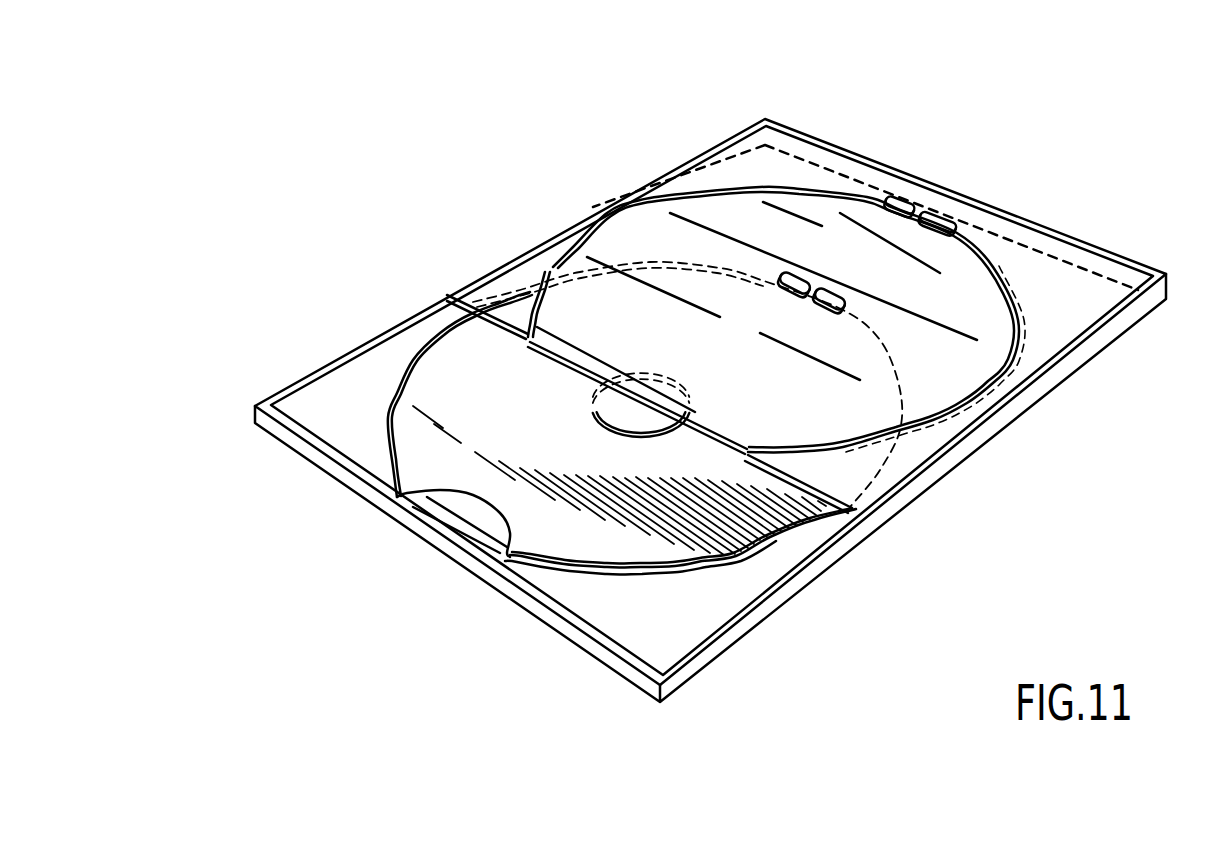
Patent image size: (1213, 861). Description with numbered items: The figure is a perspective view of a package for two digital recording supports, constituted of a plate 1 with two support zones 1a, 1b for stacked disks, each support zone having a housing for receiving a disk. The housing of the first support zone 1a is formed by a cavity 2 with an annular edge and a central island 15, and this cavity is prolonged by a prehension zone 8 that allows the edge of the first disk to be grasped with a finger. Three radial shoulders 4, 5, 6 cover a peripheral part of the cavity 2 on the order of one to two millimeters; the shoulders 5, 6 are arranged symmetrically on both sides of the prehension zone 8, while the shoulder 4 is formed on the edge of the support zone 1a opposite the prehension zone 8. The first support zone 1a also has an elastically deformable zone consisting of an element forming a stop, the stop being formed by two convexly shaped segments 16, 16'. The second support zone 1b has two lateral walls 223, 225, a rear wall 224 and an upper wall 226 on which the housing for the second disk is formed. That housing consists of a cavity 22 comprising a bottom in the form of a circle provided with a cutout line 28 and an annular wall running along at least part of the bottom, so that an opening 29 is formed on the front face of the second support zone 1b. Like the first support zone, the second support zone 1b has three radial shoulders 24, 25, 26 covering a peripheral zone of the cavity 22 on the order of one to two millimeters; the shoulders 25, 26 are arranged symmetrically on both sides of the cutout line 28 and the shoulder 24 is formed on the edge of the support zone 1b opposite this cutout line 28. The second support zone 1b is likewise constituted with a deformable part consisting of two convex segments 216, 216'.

The plate 1 is at (376, 546).
The support zone 1a is at (350, 427).
The support zone 1b is at (1065, 288).
The cavity 2 is at (720, 522).
The radial shoulder 4 is at (788, 282).
The radial shoulder 5 is at (673, 560).
The radial shoulder 6 is at (392, 394).
The prehension zone 8 is at (457, 546).
The central island 15 is at (607, 410).
The convexly shaped segment 16 is at (814, 255).
The convexly shaped segment 16' is at (887, 294).
The cavity 22 is at (985, 325).
The radial shoulder 24 is at (918, 217).
The radial shoulder 25 is at (827, 449).
The radial shoulder 26 is at (528, 297).
The cutout line 28 is at (757, 507).
The opening 29 is at (540, 368).
The convex segment 216 is at (917, 153).
The convex segment 216' is at (1008, 186).
The lateral wall 223 is at (583, 218).
The rear wall 224 is at (817, 137).
The lateral wall 225 is at (958, 447).
The upper wall 226 is at (770, 160).